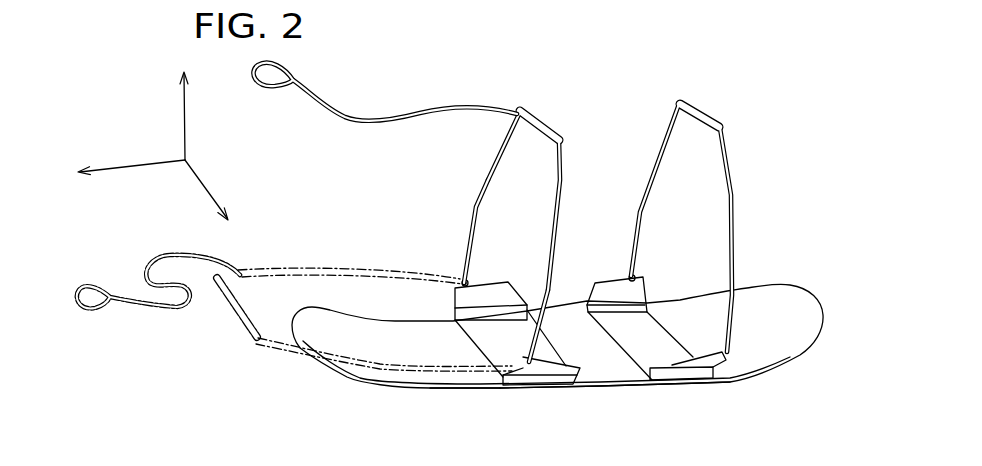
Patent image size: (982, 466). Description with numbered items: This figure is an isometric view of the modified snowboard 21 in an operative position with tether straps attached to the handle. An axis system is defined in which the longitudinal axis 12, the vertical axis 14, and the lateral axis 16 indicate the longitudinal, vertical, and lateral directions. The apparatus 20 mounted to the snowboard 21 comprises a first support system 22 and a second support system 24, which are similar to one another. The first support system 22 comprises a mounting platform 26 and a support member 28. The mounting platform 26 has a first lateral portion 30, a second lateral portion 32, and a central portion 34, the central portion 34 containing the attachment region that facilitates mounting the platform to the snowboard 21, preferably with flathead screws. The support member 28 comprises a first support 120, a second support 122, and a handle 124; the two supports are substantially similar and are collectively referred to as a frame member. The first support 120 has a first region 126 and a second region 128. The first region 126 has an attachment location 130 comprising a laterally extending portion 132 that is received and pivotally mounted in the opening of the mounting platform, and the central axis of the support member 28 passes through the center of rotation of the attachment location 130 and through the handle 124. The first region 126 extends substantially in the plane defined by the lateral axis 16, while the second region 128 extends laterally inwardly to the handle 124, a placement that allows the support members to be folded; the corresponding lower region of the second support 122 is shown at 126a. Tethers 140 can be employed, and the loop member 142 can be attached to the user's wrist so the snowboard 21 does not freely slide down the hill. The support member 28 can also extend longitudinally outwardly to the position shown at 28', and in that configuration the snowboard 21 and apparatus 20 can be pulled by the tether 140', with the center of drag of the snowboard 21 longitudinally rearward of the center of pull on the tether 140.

The longitudinal axis 12 is at (125, 164).
The vertical axis 14 is at (184, 107).
The lateral axis 16 is at (195, 178).
The apparatus 20 is at (468, 254).
The snowboard 21 is at (783, 345).
The first support system 22 is at (530, 394).
The second support system 24 is at (707, 388).
The mounting platform 26 is at (557, 381).
The support member 28 is at (576, 231).
The support member in extended position 28' is at (364, 333).
The first lateral portion 30 is at (553, 376).
The second lateral portion 32 is at (498, 287).
The central portion 34 is at (487, 343).
The first support 120 is at (508, 231).
The second support 122 is at (563, 186).
The handle 124 is at (547, 130).
The first region 126 is at (471, 241).
The lower rod portion 126a is at (549, 288).
The second region 128 is at (497, 164).
The attachment location 130 is at (461, 281).
The laterally extending portion 132 is at (490, 284).
The tether 140 is at (385, 88).
The tether in pulling configuration 140' is at (158, 302).
The loop member 142 is at (288, 72).